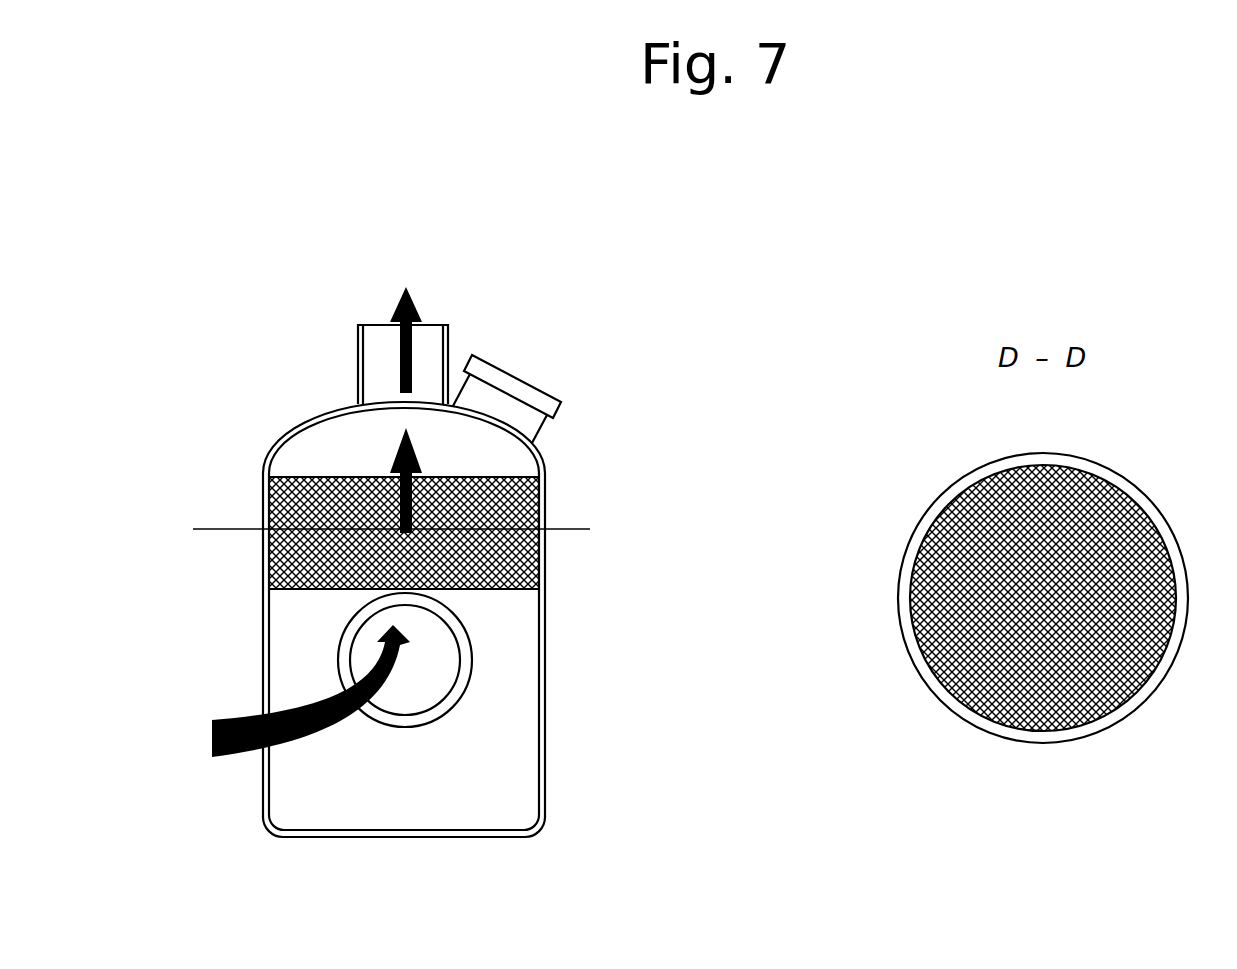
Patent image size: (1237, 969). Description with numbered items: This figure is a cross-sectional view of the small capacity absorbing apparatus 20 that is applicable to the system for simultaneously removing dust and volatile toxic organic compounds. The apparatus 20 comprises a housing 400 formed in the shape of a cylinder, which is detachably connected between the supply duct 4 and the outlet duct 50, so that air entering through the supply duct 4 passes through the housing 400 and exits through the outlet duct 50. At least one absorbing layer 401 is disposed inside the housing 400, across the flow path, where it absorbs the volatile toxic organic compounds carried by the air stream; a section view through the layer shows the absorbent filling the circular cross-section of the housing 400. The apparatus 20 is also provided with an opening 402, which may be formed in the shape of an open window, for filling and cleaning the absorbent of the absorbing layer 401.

The small capacity absorbing apparatus 20 is at (268, 354).
The housing 400 is at (257, 665).
The absorbing layer 401 is at (537, 560).
The outlet duct 50 is at (380, 340).
The opening 402 is at (495, 377).
The supply duct 4 is at (398, 722).